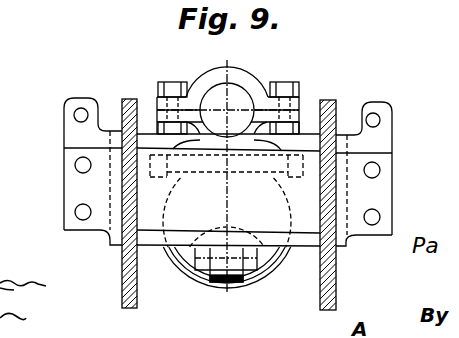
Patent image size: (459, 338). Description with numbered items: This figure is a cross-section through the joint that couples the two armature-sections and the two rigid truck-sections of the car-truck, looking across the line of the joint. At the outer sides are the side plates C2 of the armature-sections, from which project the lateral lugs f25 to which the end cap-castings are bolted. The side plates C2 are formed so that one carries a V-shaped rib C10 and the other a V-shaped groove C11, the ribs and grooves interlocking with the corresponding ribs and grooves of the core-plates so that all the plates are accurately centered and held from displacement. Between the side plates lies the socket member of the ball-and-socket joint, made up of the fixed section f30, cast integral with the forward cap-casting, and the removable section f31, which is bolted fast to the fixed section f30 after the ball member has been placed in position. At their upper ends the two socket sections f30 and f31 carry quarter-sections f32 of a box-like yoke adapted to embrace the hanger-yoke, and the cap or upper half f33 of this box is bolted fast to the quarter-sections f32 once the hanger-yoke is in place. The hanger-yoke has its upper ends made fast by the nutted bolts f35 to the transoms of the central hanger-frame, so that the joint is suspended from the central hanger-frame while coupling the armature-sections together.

The lateral lug f25 is at (418, 207).
The side plate C2 is at (367, 197).
The cap or upper half of box f33 is at (249, 82).
The quarter-section of box-like yoke f32 is at (343, 79).
The nutted bolt f35 is at (302, 73).
The V-shaped groove C11 is at (140, 189).
The V-shaped rib C10 is at (319, 191).
The fixed section of socket member f30 is at (271, 266).
The removable section of socket member f31 is at (184, 259).